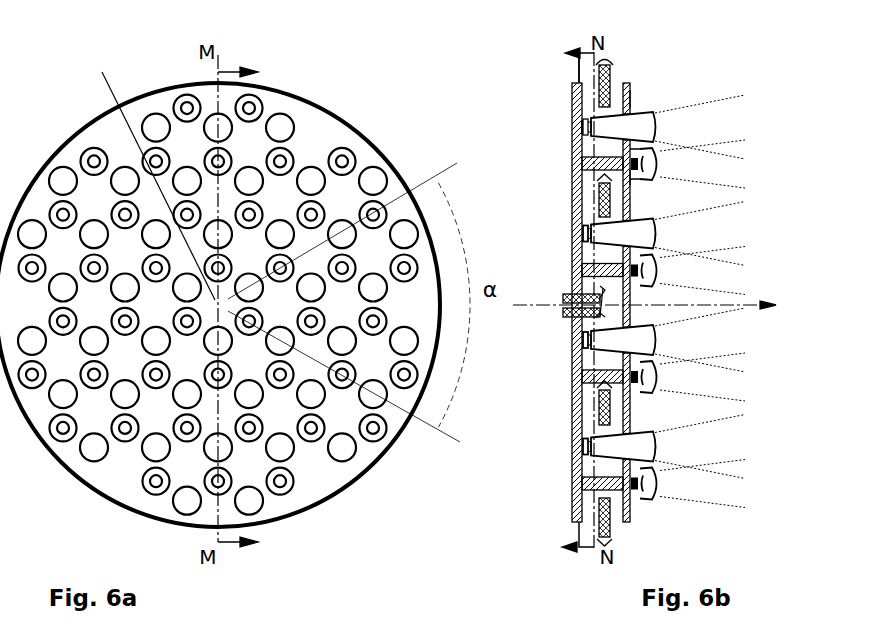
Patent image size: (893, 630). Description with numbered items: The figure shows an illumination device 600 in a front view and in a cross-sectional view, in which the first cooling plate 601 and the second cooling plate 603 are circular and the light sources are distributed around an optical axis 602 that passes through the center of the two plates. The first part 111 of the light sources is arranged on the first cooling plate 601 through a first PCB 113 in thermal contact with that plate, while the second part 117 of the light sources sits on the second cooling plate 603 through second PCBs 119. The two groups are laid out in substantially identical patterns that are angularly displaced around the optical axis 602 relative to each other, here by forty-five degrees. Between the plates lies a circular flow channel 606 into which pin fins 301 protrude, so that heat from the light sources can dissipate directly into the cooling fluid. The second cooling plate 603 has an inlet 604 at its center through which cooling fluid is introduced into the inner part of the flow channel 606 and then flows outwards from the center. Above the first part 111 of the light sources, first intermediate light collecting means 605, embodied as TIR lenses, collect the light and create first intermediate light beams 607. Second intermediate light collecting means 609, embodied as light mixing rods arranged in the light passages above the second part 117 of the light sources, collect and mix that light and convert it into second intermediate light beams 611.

In FIG. 6A, the spectral imaging assembly 600 is at (514, 557).
In FIG. 6A, the optical axis 602 is at (102, 70).
In FIG. 6B, the optical axis 602 is at (551, 310).
In FIG. 6B, the second cooling plate 603 is at (578, 52).
In FIG. 6B, the second intermediate light collecting means 609 is at (574, 120).
In FIG. 6B, the first cooling plate 601 is at (627, 80).
In FIG. 6B, the first PCB 113 is at (633, 98).
In FIG. 6B, the first part of the light sources 111 is at (637, 176).
In FIG. 6B, the pin fins 301 is at (601, 161).
In FIG. 6B, the flow channel 606 is at (607, 64).
In FIG. 6B, the second part of the light sources 117 is at (583, 125).
In FIG. 6B, the second PCBs 119 is at (578, 131).
In FIG. 6B, the second intermediate light beams 611 is at (664, 287).
In FIG. 6B, the first intermediate light beams 607 is at (688, 324).
In FIG. 6B, the first intermediate light collecting means 605 is at (664, 171).
In FIG. 6B, the inlet 604 is at (563, 298).